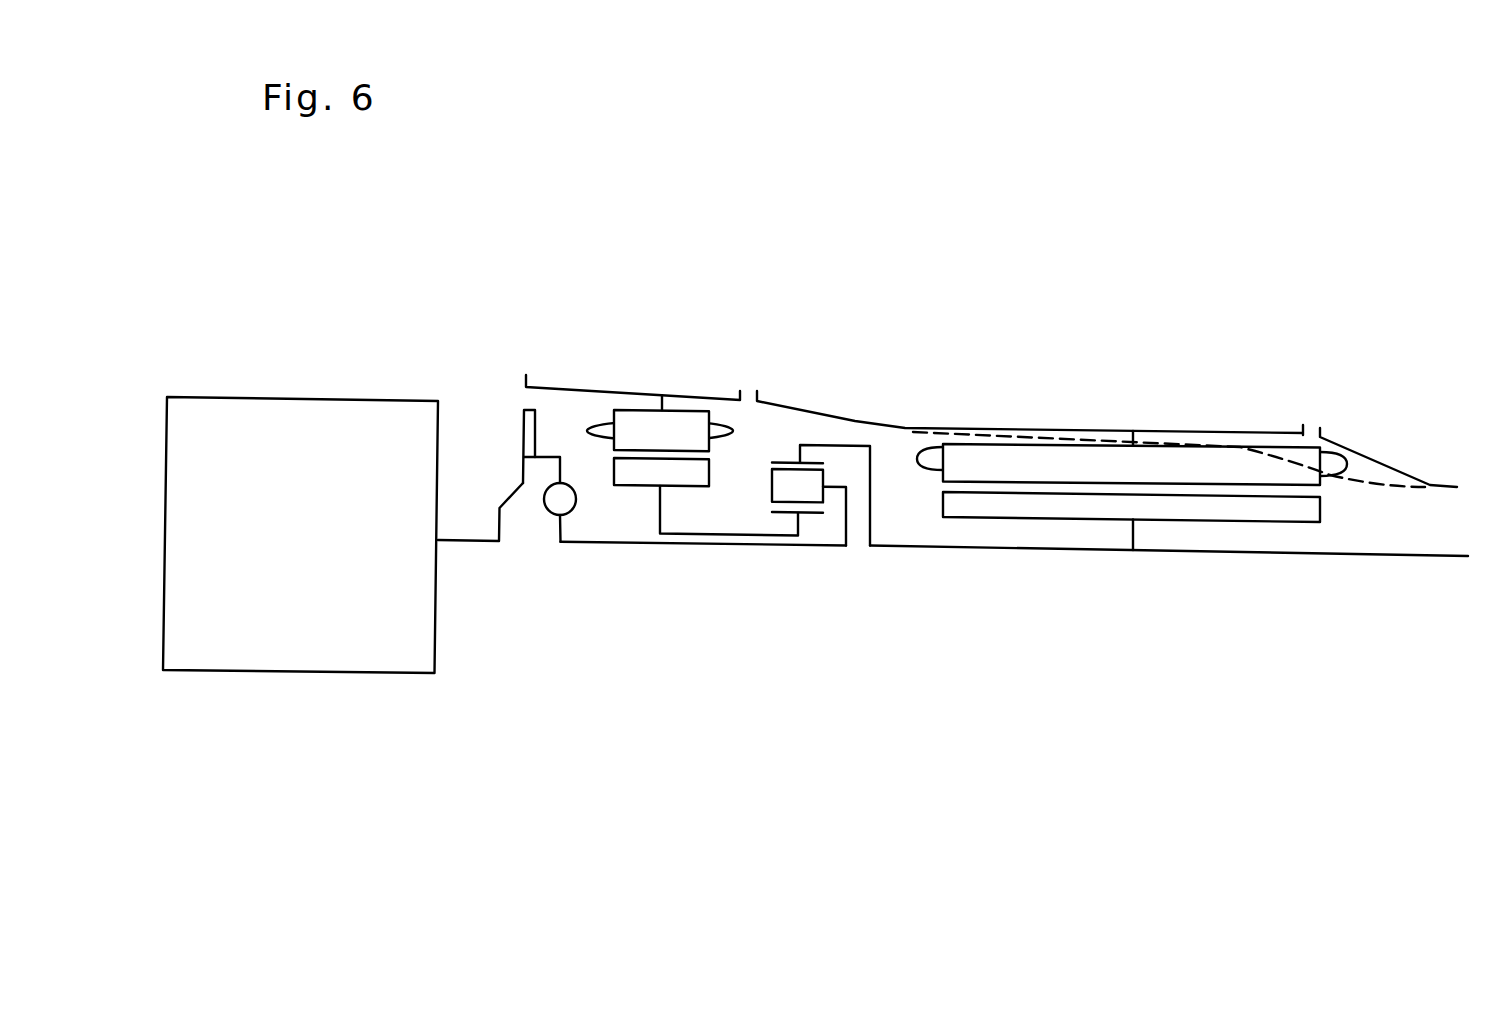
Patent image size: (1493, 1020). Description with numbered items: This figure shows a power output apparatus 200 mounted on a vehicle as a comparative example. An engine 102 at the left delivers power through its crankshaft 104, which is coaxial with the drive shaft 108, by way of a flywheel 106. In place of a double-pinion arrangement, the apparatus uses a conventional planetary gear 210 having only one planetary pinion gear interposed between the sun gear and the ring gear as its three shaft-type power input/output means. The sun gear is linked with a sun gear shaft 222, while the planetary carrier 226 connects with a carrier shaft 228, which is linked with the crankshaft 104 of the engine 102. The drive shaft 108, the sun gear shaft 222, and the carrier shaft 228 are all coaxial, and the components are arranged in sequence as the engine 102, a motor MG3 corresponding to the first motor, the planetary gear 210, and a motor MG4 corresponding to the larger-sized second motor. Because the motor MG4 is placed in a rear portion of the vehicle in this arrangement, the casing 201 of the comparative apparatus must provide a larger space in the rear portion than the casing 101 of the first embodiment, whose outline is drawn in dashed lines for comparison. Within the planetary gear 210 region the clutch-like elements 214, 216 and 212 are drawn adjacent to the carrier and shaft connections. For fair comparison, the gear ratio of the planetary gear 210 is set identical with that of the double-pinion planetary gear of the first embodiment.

The engine 102 is at (263, 397).
The crankshaft 104 is at (470, 533).
The flywheel 106 is at (523, 413).
The carrier shaft 228 is at (658, 546).
The power output apparatus 200 is at (1177, 257).
The motor MG3 is at (668, 335).
The sun gear shaft 222 is at (707, 535).
The planetary gear 210 is at (805, 388).
The clutch plate (upper) 214 is at (800, 462).
The clutch body 216 is at (771, 485).
The clutch plate (lower) 212 is at (803, 523).
The planetary carrier 226 is at (848, 520).
The motor MG4 is at (1150, 398).
The casing 201 is at (1337, 440).
The casing 101 is at (1358, 478).
The drive shaft 108 is at (1430, 557).